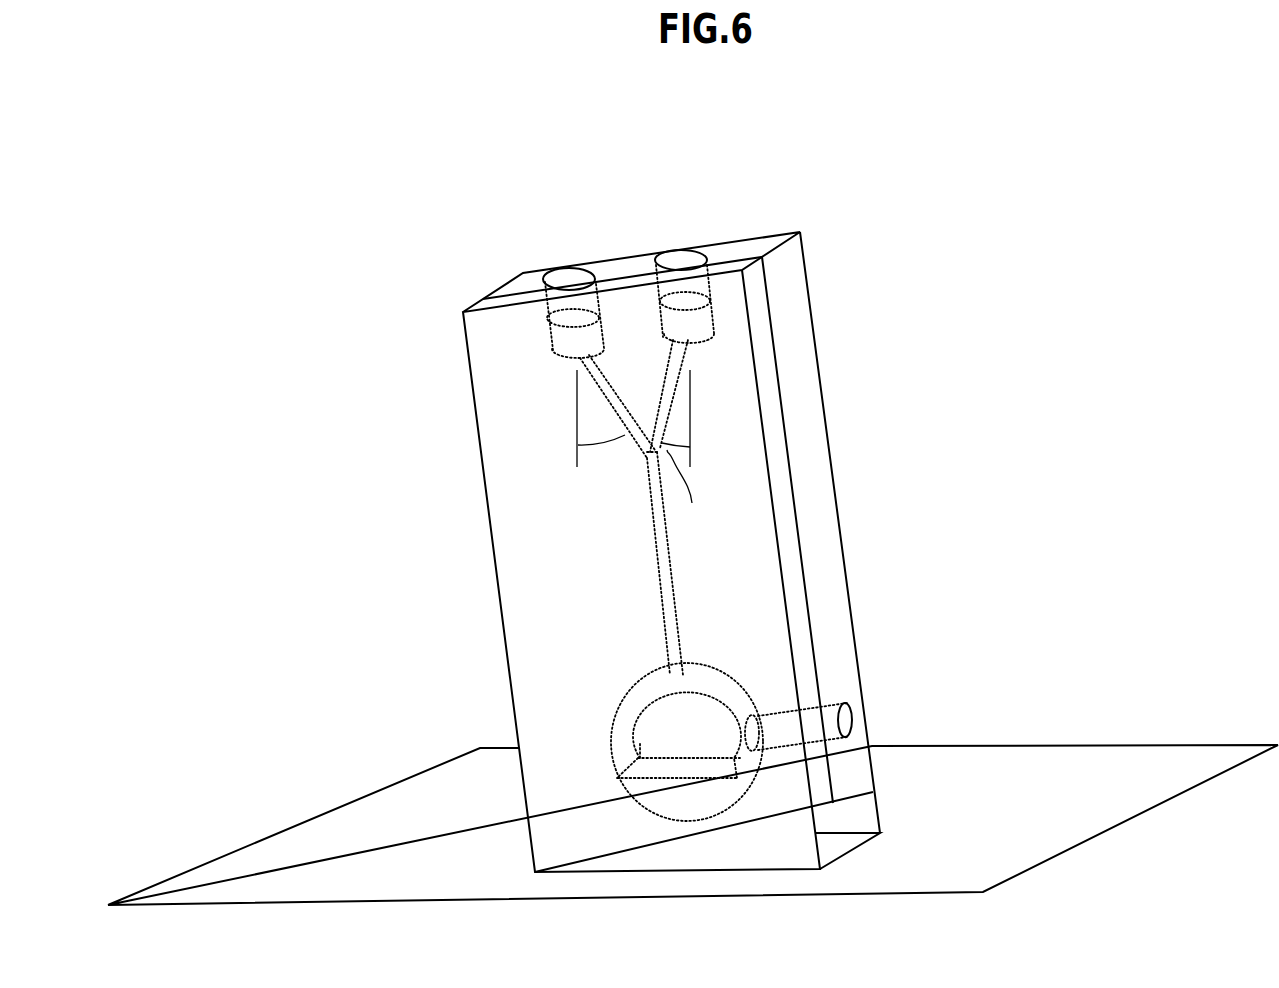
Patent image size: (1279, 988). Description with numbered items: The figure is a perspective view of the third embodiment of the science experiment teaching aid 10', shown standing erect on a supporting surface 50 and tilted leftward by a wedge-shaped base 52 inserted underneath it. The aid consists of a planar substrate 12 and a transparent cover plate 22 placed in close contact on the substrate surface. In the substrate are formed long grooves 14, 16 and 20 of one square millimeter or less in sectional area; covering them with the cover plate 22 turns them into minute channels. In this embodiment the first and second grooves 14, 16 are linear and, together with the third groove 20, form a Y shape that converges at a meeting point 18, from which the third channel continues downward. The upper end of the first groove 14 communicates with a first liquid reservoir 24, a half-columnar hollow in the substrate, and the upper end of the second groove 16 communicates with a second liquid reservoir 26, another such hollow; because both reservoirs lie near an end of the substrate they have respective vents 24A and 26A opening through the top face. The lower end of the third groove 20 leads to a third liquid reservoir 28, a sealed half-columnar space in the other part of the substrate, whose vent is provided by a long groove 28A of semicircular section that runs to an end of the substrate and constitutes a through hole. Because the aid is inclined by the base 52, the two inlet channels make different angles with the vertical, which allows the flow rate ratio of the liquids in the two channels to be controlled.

The science experiment teaching aid 10' is at (657, 495).
The substrate 12 is at (875, 760).
The transparent cover plate 22 is at (533, 838).
The first liquid reservoir 24 is at (713, 307).
The vent 24A is at (678, 257).
The second liquid reservoir 26 is at (550, 347).
The vent 26A is at (566, 272).
The long groove 14 is at (680, 358).
The long groove 16 is at (593, 377).
The meeting point 18 is at (648, 465).
The long groove 20 is at (655, 540).
The third liquid reservoir 28 is at (620, 725).
The long groove 28A is at (853, 721).
The base 50 is at (1087, 838).
The wedge-shaped base 52 is at (858, 848).